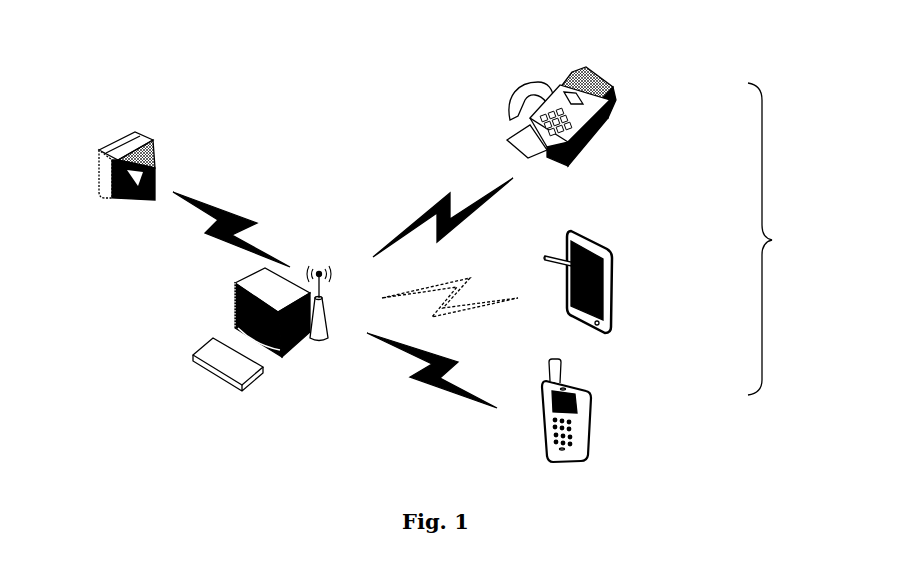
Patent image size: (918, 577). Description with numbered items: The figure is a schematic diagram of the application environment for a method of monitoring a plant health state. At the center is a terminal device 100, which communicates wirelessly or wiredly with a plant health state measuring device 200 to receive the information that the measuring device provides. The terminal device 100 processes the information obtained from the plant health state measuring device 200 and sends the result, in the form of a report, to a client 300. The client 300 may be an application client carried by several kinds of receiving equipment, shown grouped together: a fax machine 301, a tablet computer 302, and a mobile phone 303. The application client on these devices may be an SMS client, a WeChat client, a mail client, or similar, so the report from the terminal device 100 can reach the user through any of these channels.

The terminal device 100 is at (303, 358).
The plant health state measuring device 200 is at (120, 140).
The client 300 is at (787, 239).
The fax machine 301 is at (613, 115).
The tablet computer 302 is at (620, 283).
The mobile phone 303 is at (605, 425).